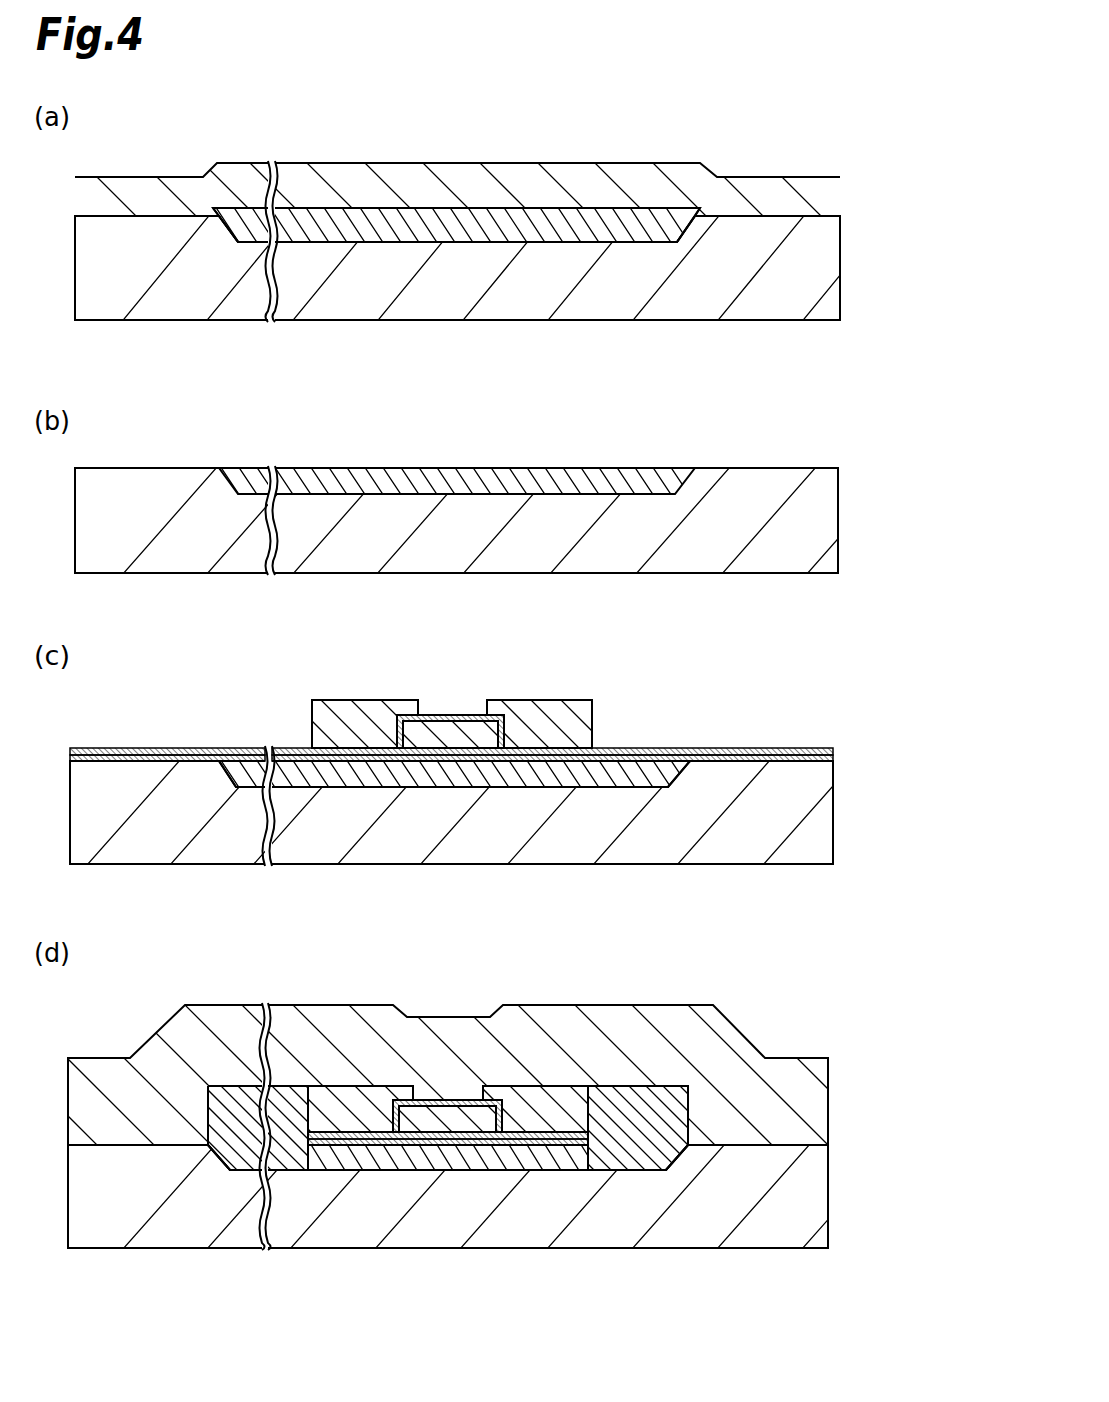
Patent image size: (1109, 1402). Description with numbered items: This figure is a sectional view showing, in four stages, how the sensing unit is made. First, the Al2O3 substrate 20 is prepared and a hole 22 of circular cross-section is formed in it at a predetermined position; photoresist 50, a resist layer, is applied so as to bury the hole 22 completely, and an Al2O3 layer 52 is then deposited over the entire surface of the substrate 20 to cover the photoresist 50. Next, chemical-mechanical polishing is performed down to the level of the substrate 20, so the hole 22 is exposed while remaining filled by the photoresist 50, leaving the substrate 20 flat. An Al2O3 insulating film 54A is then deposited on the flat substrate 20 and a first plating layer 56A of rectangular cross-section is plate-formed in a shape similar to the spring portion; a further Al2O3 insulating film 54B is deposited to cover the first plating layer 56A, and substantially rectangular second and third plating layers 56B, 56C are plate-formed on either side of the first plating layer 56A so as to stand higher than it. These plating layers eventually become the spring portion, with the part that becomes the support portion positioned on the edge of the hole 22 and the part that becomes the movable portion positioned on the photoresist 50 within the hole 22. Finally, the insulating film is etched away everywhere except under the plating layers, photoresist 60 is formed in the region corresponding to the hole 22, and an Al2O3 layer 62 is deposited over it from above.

The Al2O3 substrate 20 is at (692, 300).
The hole 22 is at (681, 224).
The photoresist (resist layer) 50 is at (536, 237).
The Al2O3 layer 52 is at (576, 170).
The Al2O3 insulating film 54A is at (810, 757).
The Al2O3 insulating film 54B is at (810, 750).
The first plating layer 56A is at (448, 730).
The second plating layer 56B is at (355, 712).
The third plating layer 56C is at (553, 712).
The photoresist (resist layer) 60 is at (688, 1103).
The Al2O3 layer 62 is at (798, 1075).